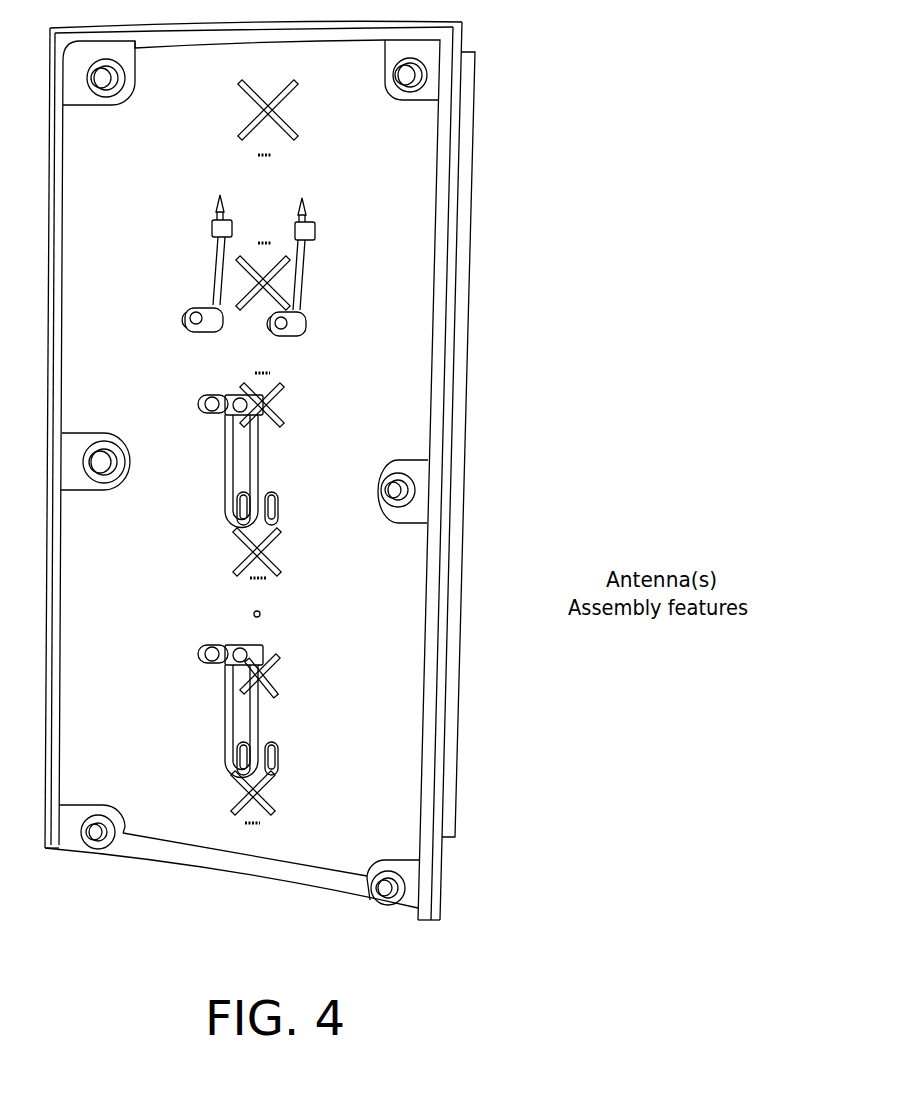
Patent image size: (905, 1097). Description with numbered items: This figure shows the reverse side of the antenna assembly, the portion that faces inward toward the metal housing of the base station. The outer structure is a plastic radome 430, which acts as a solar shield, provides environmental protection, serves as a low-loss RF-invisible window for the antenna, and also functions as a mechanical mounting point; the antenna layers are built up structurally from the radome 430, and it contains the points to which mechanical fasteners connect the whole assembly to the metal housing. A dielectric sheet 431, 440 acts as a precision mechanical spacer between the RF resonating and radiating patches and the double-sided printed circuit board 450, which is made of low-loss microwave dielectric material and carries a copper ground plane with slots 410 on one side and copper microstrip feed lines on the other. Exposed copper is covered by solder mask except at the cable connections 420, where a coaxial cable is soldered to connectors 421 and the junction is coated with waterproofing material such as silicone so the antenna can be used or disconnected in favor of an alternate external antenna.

The slots 410 is at (270, 800).
The cable connections 420 is at (278, 758).
The connectors 421 is at (265, 647).
The plastic radome 430 is at (462, 22).
The dielectric sheet 431 is at (418, 495).
The dielectric sheet 440 is at (427, 53).
The double-sided printed circuit board 450 is at (370, 197).